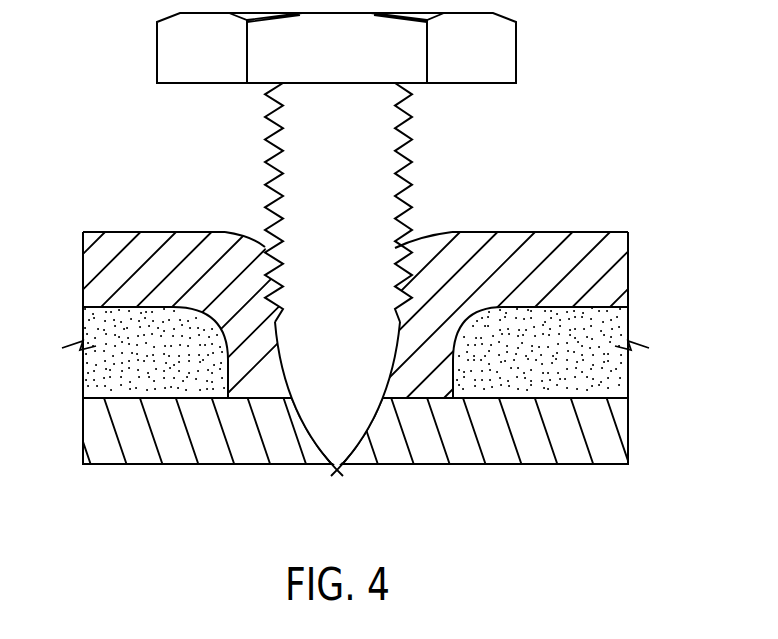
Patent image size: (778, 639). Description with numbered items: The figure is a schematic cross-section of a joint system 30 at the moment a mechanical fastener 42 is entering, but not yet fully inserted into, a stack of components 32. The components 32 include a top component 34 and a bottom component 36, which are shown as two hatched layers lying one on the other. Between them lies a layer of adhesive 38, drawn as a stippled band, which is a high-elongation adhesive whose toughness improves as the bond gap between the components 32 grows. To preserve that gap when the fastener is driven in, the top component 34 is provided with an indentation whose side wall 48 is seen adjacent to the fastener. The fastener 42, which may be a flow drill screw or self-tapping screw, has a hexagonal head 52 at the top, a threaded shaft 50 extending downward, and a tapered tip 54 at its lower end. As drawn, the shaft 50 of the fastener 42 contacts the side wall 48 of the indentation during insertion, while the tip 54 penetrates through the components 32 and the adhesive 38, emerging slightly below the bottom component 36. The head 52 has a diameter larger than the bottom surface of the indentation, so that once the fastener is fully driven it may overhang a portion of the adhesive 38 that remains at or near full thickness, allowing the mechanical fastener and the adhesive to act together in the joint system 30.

The joint system 30 is at (67, 112).
The components 32 is at (620, 277).
The top component 34 is at (92, 268).
The bottom component 36 is at (92, 452).
The adhesive 38 is at (92, 378).
The mechanical fastener 42 is at (388, 143).
The side wall 48 is at (397, 388).
The shaft 50 is at (295, 187).
The head 52 is at (505, 55).
The tip 54 is at (340, 457).